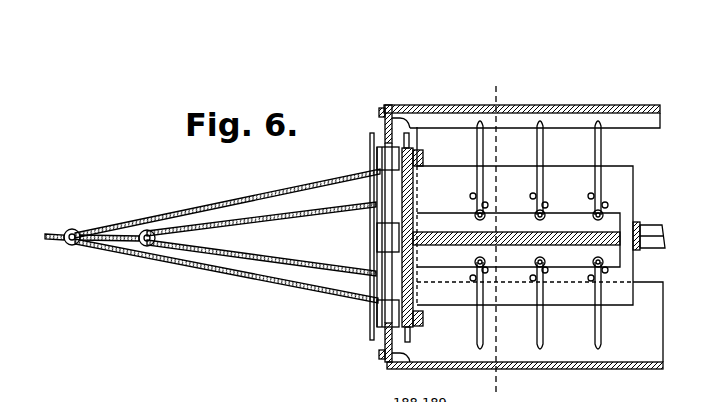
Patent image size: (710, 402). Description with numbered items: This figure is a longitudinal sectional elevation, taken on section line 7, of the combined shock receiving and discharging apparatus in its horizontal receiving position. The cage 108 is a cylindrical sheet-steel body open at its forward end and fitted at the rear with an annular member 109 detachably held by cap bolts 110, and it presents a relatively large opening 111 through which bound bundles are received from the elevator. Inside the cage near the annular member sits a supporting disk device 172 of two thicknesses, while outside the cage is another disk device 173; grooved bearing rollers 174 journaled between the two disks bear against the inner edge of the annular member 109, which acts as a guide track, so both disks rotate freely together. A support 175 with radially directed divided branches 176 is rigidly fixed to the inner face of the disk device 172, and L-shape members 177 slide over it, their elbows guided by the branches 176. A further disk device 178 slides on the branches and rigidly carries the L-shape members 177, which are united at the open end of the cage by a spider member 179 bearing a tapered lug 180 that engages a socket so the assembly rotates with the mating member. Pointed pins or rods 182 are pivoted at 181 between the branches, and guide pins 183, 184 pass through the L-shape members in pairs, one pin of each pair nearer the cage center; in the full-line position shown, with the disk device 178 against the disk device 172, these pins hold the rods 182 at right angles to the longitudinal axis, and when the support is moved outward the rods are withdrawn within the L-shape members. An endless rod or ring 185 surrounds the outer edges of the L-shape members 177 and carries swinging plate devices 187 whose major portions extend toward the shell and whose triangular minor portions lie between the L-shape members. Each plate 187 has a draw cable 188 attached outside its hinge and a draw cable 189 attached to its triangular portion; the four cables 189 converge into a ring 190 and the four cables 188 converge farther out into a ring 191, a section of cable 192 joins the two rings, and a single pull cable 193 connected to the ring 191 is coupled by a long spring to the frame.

The section line 7- 7 is at (494, 235).
The cage 108 is at (557, 106).
The annular member 109 is at (384, 129).
The cap bolts 110 is at (382, 110).
The opening 111 is at (645, 153).
The supporting disk device 172 is at (388, 290).
The disk device 173 is at (370, 157).
The grooved bearing rollers 174 is at (385, 159).
The support 175 is at (521, 232).
The divided branches 176 is at (517, 296).
The L-shape members 177 is at (540, 235).
The disk device 178 is at (418, 259).
The spider member 179 is at (638, 227).
The lug 180 is at (661, 233).
The pivot 181 is at (474, 217).
The pointed pins or rods 182 is at (605, 326).
The guide pin 183 is at (530, 196).
The guide pin 184 is at (548, 204).
The endless rod or ring 185 is at (423, 158).
The plate devices 187 is at (409, 137).
The draw cable 188 is at (282, 194).
The draw cable 189 is at (307, 214).
The ring 190 is at (147, 229).
The ring 191 is at (84, 230).
The section of cable 192 is at (118, 243).
The pull cable 193 is at (58, 230).